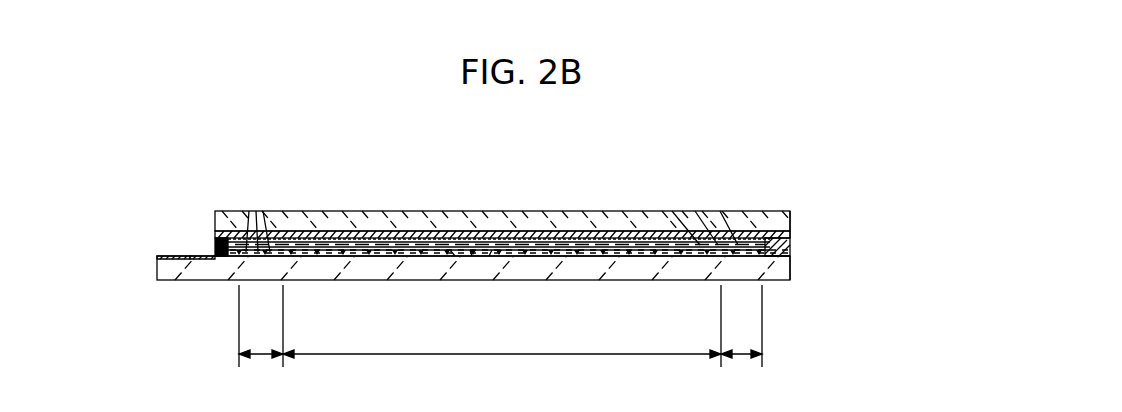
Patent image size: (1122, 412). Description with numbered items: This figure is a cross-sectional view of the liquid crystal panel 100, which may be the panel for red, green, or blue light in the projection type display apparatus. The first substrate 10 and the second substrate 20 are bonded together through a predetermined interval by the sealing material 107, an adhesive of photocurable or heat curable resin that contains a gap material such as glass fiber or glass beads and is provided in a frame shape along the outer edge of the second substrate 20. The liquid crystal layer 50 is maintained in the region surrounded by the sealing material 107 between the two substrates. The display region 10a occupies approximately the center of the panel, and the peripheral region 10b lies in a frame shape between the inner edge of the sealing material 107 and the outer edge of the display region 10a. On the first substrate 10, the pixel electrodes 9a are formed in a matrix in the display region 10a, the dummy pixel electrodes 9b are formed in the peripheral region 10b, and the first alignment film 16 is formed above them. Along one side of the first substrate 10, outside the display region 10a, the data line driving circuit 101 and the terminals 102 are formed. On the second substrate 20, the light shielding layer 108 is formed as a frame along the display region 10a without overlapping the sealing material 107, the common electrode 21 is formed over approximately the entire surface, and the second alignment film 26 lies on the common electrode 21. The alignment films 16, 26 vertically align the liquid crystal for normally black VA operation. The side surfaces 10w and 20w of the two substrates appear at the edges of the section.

The liquid crystal panel 100 is at (765, 117).
The second substrate 20 is at (752, 211).
The side surface of sealing substrate 20w is at (790, 229).
The light shielding layer 108 is at (283, 211).
The common electrode 21 is at (444, 240).
The first alignment film 16 is at (538, 244).
The second alignment film 26 is at (598, 248).
The liquid crystal layer 50 is at (578, 257).
The pixel electrodes 9a is at (489, 256).
The dummy pixel electrodes 9b is at (263, 211).
The sealing material 107 is at (790, 249).
The first substrate 10 is at (650, 282).
The side surface of substrate 10w is at (790, 268).
The data line driving circuit 101 is at (215, 256).
The terminals 102 is at (165, 256).
The display region 10a is at (502, 368).
The peripheral region 10b is at (500, 336).